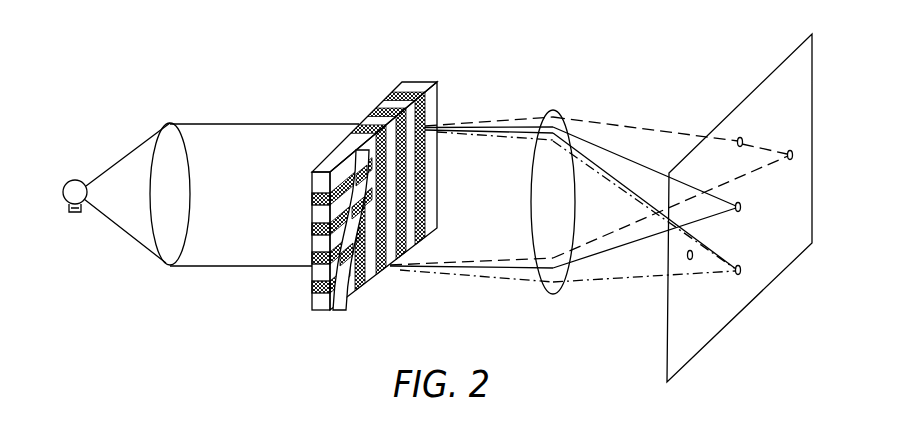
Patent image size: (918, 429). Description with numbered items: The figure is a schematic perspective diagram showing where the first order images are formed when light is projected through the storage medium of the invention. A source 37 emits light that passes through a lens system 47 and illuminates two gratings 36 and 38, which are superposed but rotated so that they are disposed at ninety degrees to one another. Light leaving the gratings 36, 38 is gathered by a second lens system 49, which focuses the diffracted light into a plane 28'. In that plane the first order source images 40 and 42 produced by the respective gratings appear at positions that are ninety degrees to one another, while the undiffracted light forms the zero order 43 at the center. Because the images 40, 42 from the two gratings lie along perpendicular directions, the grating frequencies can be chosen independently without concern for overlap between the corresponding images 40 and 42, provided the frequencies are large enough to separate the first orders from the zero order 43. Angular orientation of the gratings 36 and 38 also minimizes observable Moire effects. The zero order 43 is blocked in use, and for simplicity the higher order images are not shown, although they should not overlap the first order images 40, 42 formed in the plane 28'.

The source 37 is at (77, 181).
The lens system 47 is at (173, 133).
The grating 36 is at (312, 290).
The grating 38 is at (370, 293).
The lens system 49 is at (556, 113).
The plane 28' is at (768, 208).
The first order source images 40 is at (738, 138).
The first order source images 42 is at (793, 158).
The zero order 43 is at (742, 207).